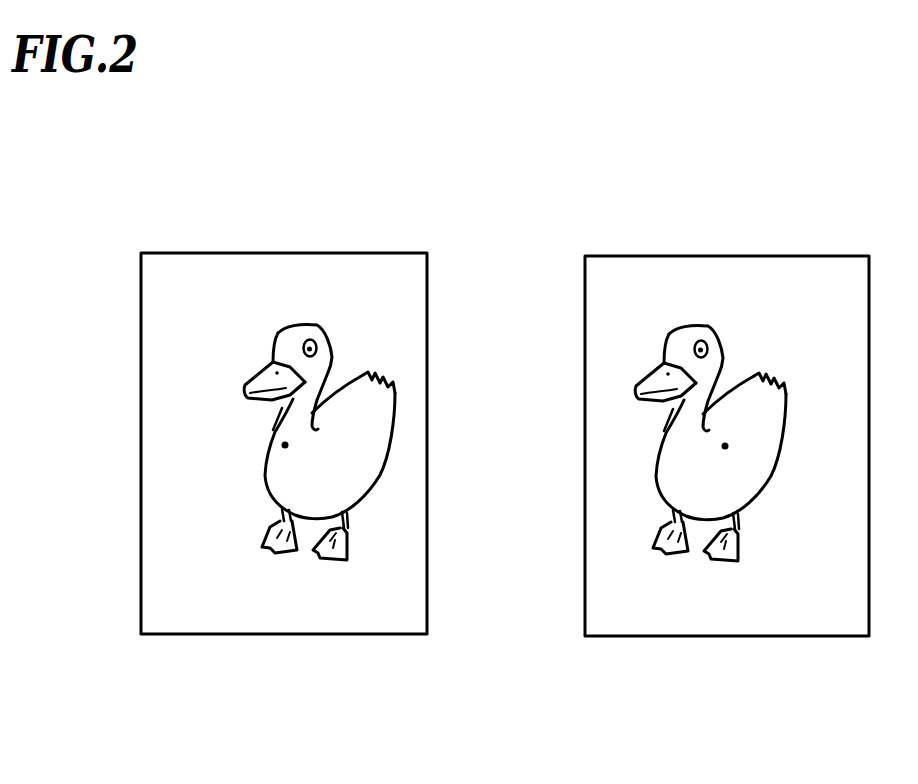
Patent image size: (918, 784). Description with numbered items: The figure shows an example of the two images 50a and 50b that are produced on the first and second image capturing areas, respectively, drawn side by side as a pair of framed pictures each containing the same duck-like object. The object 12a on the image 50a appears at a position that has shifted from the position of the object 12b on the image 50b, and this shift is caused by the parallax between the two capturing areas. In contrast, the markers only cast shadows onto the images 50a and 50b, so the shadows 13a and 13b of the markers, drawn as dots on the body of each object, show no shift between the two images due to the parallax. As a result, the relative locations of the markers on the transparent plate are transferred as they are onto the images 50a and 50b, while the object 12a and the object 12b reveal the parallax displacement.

The object 12a is at (737, 420).
The object 12b is at (340, 407).
The shadow of marker 13a is at (725, 446).
The shadow of marker 13b is at (285, 445).
The image 50a is at (638, 637).
The image 50b is at (394, 635).